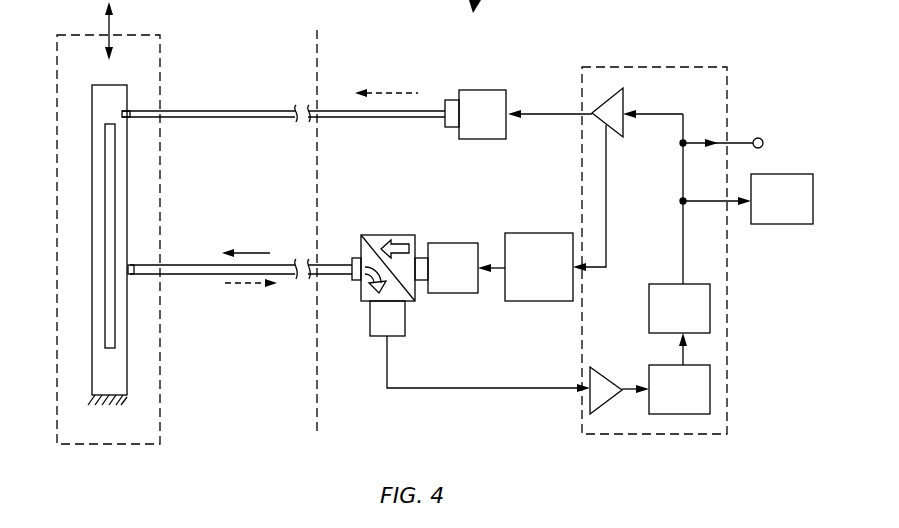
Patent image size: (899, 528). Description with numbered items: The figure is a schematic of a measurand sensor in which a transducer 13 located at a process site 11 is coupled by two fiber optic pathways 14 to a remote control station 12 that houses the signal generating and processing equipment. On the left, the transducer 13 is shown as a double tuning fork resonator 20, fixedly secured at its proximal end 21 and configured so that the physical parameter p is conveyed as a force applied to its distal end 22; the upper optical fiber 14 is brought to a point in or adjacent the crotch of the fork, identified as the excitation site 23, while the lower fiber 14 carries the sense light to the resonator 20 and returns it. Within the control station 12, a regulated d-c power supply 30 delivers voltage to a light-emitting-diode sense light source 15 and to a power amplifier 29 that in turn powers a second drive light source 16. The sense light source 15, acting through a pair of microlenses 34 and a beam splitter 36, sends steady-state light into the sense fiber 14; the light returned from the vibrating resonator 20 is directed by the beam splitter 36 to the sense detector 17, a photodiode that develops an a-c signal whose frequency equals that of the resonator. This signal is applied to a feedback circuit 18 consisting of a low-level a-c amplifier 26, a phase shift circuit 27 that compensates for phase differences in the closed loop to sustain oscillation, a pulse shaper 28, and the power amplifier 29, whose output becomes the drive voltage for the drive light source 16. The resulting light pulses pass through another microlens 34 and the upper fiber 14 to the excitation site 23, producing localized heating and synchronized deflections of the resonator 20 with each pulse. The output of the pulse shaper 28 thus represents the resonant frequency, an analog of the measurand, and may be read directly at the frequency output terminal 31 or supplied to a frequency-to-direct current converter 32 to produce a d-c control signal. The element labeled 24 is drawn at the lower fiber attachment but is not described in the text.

The process site 11 is at (244, 418).
The control station 12 is at (426, 418).
The transducer 13 is at (162, 445).
The fiber optic pathways 14 is at (212, 271).
The sense light source 15 is at (447, 243).
The drive light source 16 is at (487, 90).
The sense detector 17 is at (407, 336).
The feedback circuit 18 is at (675, 435).
The double tuning fork resonator 20 is at (92, 258).
The proximal end 21 is at (88, 393).
The distal end 22 is at (141, 69).
The excitation site 23 is at (100, 110).
The sense attachment point 24 is at (142, 252).
The low-level a-c amplifier 26 is at (607, 400).
The phase shift circuit 27 is at (660, 365).
The pulse shaper 28 is at (665, 284).
The power amplifier 29 is at (596, 110).
The regulated d-c power supply 30 is at (560, 233).
The frequency output terminal 31 is at (760, 138).
The frequency-to-direct current converter 32 is at (765, 225).
The microlens 34 is at (452, 100).
The beam splitter 36 is at (417, 301).